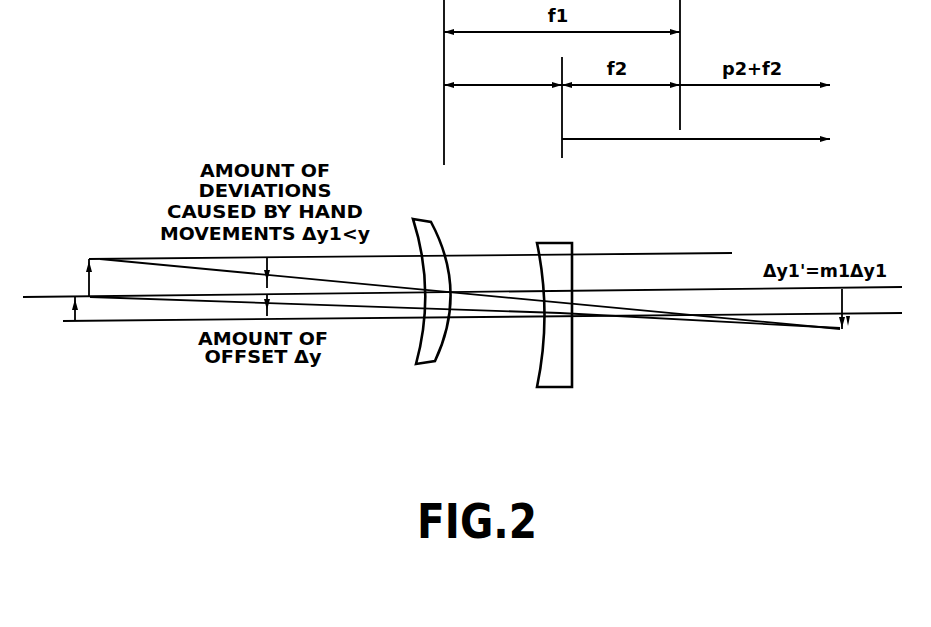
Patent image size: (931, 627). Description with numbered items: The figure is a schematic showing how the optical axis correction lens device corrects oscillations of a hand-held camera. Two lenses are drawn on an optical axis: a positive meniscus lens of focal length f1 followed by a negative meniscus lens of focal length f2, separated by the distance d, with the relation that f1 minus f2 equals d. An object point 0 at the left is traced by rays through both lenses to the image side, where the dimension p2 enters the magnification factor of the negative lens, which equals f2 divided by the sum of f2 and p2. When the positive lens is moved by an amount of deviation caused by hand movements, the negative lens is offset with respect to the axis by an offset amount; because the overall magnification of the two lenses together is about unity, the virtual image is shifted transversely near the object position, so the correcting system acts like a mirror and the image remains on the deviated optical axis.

The focal length of the positive meniscus lens f1 is at (432, 365).
The focal length of the negative meniscus lens f2 is at (555, 388).
The object point / reference origin 0 is at (90, 263).
The distance between the positive meniscus lens and the negative meniscus lens d is at (503, 73).
The object distance of the negative meniscus lens p2 is at (696, 151).